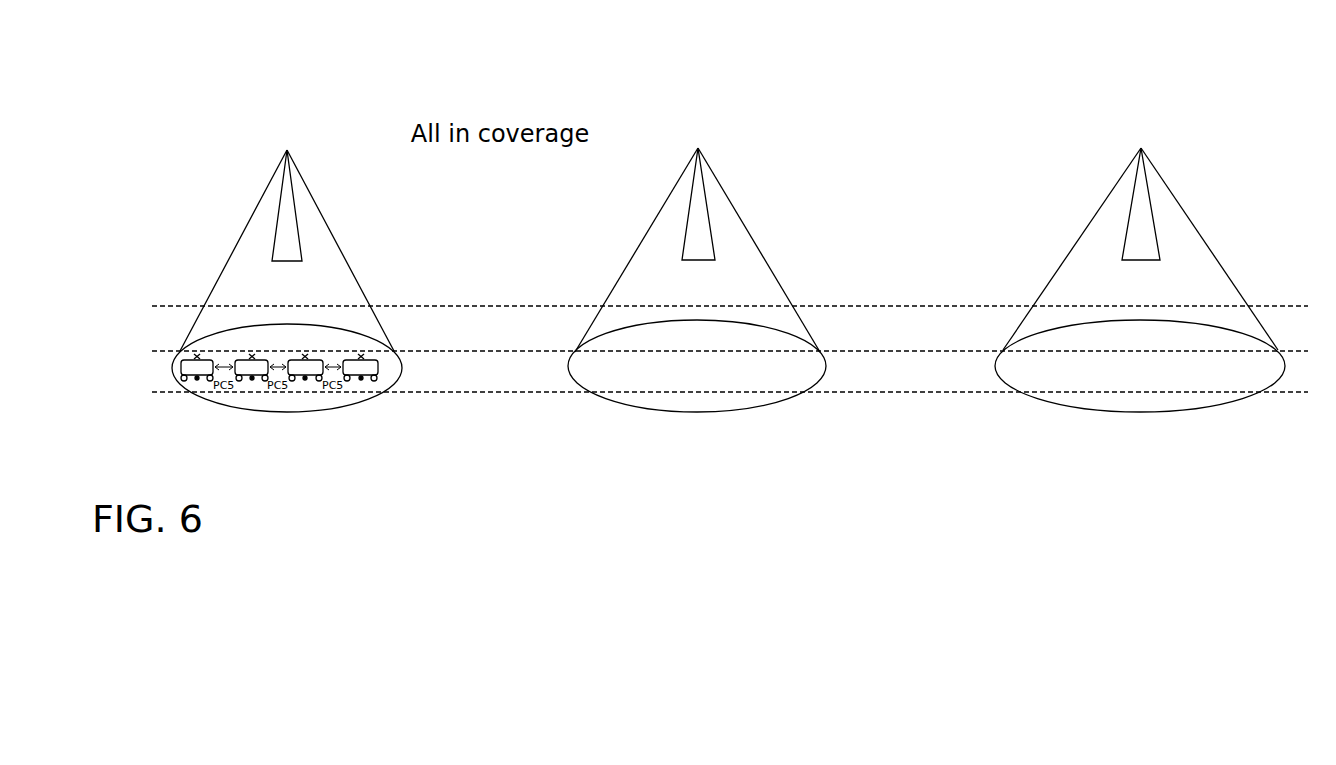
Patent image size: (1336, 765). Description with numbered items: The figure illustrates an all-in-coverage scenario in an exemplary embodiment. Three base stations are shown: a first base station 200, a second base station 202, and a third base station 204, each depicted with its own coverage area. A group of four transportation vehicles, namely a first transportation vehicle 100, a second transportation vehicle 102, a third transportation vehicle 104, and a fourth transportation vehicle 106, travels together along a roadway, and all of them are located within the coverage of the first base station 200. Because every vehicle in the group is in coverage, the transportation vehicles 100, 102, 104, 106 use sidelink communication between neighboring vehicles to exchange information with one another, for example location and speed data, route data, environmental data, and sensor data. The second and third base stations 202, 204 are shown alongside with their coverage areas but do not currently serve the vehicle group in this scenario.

The base station BS1 200 is at (287, 113).
The base station BS2 202 is at (699, 113).
The base station BS3 204 is at (1143, 113).
The transportation vehicle V1 100 is at (198, 380).
The transportation vehicle V2 102 is at (252, 380).
The transportation vehicle V3 104 is at (306, 380).
The transportation vehicle V4 106 is at (361, 380).